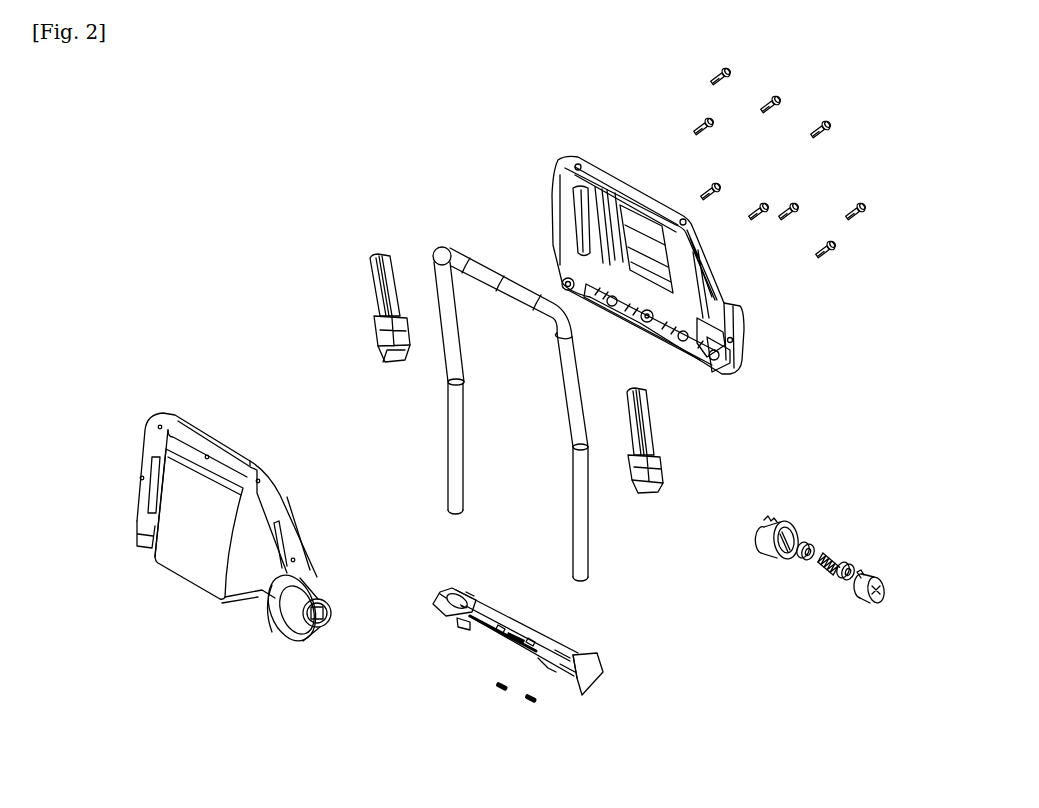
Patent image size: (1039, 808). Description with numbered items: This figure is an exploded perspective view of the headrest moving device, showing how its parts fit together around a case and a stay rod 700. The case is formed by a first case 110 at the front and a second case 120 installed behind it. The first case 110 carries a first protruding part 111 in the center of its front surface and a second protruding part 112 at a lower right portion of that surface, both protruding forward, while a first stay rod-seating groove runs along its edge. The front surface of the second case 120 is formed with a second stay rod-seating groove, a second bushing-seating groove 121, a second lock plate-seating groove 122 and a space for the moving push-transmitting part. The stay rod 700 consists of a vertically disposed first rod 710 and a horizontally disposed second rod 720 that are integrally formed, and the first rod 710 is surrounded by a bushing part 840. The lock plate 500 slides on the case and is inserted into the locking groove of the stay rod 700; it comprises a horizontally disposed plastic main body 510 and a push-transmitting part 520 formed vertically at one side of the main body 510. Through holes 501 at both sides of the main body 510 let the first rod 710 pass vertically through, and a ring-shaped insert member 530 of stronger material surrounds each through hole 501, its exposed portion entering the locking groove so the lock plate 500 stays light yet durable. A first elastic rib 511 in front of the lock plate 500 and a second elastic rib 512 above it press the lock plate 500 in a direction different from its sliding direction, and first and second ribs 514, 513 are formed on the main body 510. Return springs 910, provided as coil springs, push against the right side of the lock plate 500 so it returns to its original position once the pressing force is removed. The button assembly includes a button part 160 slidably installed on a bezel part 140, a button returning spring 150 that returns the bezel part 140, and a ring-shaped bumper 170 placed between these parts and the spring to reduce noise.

The first case 110 is at (142, 420).
The first protruding part 111 is at (177, 557).
The second protruding part 112 is at (277, 633).
The second case 120 is at (556, 162).
The second bushing-seating groove 121 is at (574, 230).
The second lock plate-seating groove 122 is at (650, 300).
The stay rod 700 is at (428, 240).
The first rod 710 is at (457, 350).
The second rod 720 is at (495, 270).
The bushing part 840 is at (363, 256).
The lock plate 500 is at (602, 694).
The through hole 501 is at (440, 610).
The main body 510 is at (473, 617).
The first elastic rib 511 is at (545, 675).
The second elastic rib 512 is at (507, 647).
The second rib 513 is at (532, 623).
The first rib 514 is at (467, 592).
The push-transmitting part 520 is at (597, 660).
The insert member 530 is at (450, 592).
The return spring 910 is at (533, 702).
The bezel part 140 is at (782, 517).
The button returning spring 150 is at (830, 548).
The button part 160 is at (873, 573).
The bumper 170 is at (810, 543).